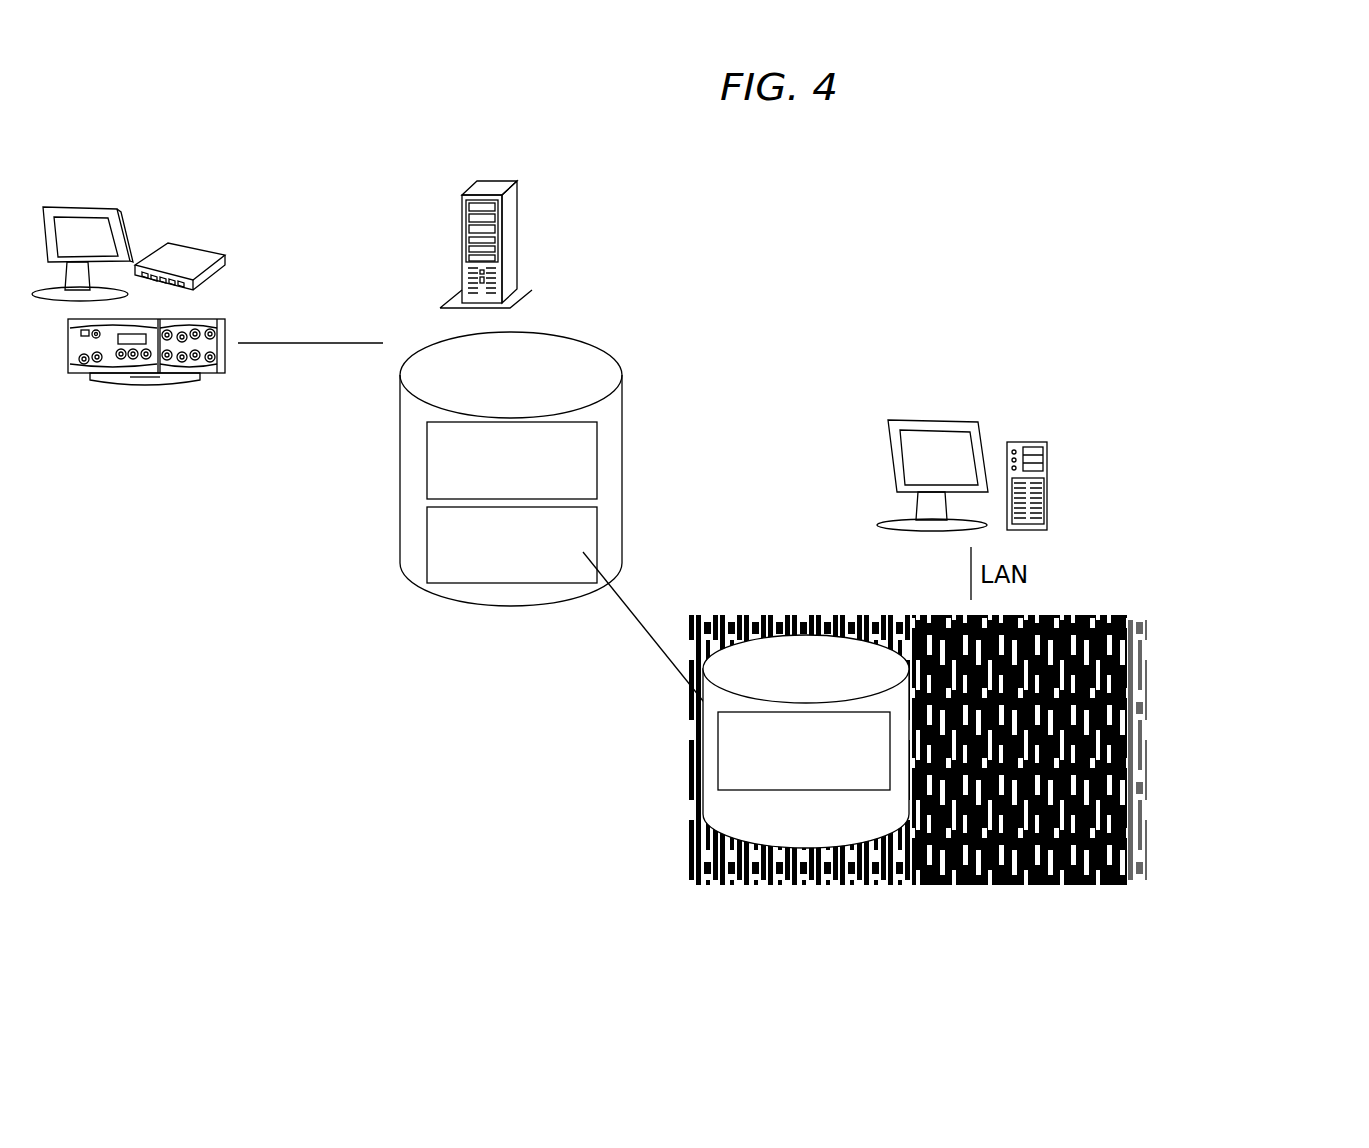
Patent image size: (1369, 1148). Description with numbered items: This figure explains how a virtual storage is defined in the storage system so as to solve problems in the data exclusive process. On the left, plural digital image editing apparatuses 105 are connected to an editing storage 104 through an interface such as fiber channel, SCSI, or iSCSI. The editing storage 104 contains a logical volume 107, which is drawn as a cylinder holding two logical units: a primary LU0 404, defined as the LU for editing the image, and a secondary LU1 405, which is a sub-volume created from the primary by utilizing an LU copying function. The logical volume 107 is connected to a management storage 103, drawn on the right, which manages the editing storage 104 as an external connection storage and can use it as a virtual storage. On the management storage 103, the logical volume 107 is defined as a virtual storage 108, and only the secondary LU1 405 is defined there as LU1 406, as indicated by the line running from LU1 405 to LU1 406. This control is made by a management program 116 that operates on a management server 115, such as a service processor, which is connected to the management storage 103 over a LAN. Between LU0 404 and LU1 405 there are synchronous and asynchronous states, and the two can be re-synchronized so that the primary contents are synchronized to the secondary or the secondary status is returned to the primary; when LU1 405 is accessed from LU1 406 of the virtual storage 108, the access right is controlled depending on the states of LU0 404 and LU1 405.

The digital image editing apparatus 105 is at (135, 235).
The editing storage 104 is at (514, 205).
The logical volume 107 is at (599, 342).
The LU0 404 is at (428, 458).
The LU1 405 is at (430, 535).
The virtual storage 108 is at (806, 635).
The LU1 406 is at (723, 752).
The management server 115 is at (1030, 440).
The management program 116 is at (1048, 497).
The management storage 103 is at (1010, 880).